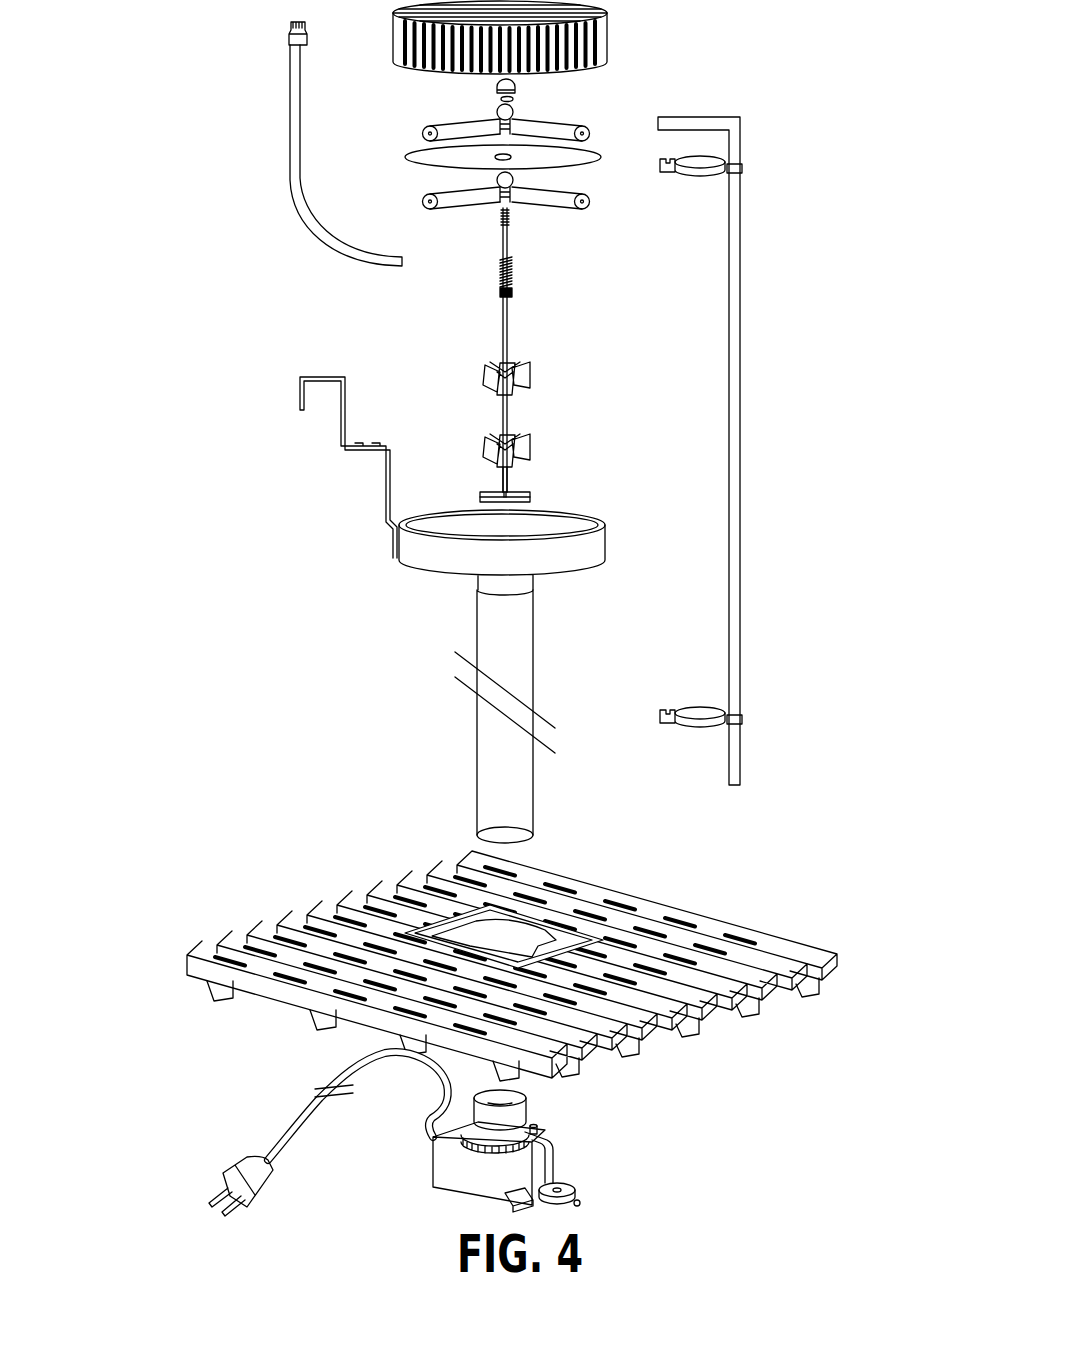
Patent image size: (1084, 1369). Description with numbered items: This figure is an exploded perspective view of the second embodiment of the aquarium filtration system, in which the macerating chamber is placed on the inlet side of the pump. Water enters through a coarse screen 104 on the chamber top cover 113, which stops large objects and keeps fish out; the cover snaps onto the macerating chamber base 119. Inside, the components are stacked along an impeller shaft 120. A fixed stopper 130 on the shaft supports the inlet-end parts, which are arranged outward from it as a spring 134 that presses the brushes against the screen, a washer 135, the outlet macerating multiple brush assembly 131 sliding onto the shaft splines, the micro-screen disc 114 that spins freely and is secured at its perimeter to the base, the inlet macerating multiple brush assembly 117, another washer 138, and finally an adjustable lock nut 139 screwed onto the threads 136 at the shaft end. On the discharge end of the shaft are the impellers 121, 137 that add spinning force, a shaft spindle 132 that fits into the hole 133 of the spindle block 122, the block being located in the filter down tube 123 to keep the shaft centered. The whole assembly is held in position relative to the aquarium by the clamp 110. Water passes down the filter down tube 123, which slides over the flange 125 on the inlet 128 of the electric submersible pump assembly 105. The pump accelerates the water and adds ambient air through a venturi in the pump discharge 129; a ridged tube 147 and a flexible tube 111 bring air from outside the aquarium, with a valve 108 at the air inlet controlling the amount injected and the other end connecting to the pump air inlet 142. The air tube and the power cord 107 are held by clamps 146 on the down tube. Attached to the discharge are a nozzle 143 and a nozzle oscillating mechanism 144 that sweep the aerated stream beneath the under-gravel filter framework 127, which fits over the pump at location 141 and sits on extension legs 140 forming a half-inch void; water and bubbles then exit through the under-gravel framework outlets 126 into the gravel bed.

The coarse screen 104 is at (605, 37).
The chamber top cover 113 is at (607, 60).
The adjustable lock nut 139 is at (500, 90).
The washer 138 is at (515, 100).
The inlet macerating multiple brush assembly 117 is at (424, 131).
The micro-screen disc 114 is at (408, 158).
The outlet macerating multiple brush assembly 131 is at (452, 209).
The impeller shaft 120 is at (503, 329).
The threads 136 is at (510, 218).
The spring 134 is at (500, 276).
The washer 135 is at (512, 271).
The fixed stopper 130 is at (512, 294).
The impeller 121 is at (530, 378).
The impeller 137 is at (532, 446).
The shaft spindle 132 is at (507, 478).
The hole 133 is at (505, 492).
The spindle block 122 is at (480, 497).
The macerating chamber base 119 is at (607, 540).
The filter down tube 123 is at (535, 641).
The clamp 110 is at (388, 478).
The flexible tube 111 is at (290, 98).
The valve 108 is at (290, 33).
The ridged tube 147 is at (741, 290).
The clamps 146 is at (742, 158).
The under-gravel framework outlets 126 is at (500, 945).
The under-gravel filter framework 127 is at (800, 950).
The extension legs 140 is at (207, 990).
The location 141 is at (482, 928).
The power cord 107 is at (300, 1125).
The electric submersible pump assembly 105 is at (433, 1165).
The flange 125 is at (528, 1110).
The inlet 128 is at (500, 1100).
The pump air inlet 142 is at (540, 1130).
The pump discharge 129 is at (556, 1165).
The nozzle 143 is at (580, 1203).
The nozzle oscillating mechanism 144 is at (505, 1198).